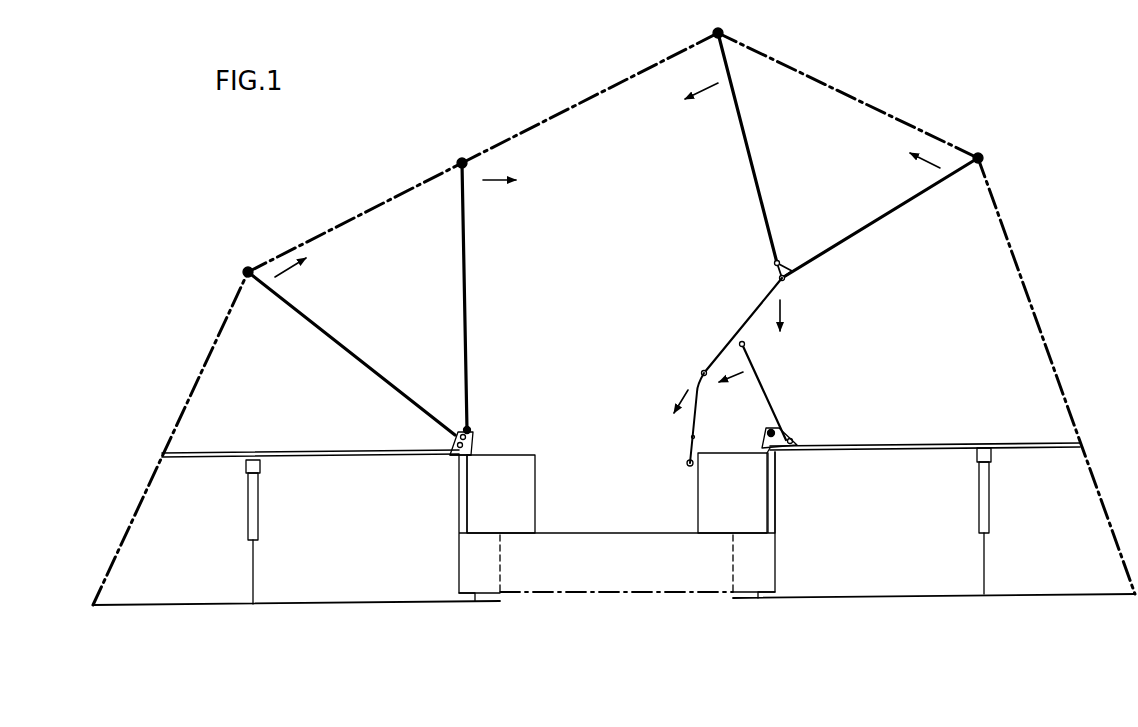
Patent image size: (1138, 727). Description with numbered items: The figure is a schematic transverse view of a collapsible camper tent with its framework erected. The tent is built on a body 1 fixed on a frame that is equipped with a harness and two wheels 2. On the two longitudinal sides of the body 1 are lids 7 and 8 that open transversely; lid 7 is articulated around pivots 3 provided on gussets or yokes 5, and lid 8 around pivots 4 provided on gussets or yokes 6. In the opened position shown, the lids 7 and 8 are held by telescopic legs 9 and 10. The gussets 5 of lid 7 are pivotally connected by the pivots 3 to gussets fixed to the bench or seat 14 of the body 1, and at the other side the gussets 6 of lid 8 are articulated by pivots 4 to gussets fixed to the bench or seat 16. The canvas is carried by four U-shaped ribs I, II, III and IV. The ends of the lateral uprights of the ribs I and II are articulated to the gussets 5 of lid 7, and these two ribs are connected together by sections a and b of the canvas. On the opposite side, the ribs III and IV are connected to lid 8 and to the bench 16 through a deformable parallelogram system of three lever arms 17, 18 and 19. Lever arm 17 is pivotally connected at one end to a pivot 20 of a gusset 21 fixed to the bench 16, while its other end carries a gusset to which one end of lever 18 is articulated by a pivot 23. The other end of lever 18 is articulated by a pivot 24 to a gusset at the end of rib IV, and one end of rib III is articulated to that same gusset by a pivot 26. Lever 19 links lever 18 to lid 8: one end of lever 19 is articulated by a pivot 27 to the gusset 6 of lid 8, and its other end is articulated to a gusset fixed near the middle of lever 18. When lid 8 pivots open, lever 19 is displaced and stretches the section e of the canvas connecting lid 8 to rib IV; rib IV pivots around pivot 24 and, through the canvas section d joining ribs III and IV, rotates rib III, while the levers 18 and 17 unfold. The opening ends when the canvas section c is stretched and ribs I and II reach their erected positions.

The body 1 is at (457, 492).
The wheels 2 is at (742, 575).
The pivot 3 is at (468, 430).
The pivot 4 is at (770, 430).
The gusset or yoke 5 is at (472, 447).
The gusset or yoke 6 is at (783, 447).
The lid 7 is at (310, 455).
The lid 8 is at (898, 448).
The telescopic leg 9 is at (253, 512).
The telescopic leg 10 is at (990, 493).
The bench or seat 14 is at (522, 518).
The bench or seat 16 is at (735, 500).
The lever arm 17 is at (690, 420).
The lever arm 18 is at (750, 317).
The lever arm 19 is at (765, 383).
The pivot 20 is at (693, 437).
The gusset 21 is at (687, 475).
The pivot 23 is at (704, 373).
The pivot 24 is at (783, 282).
The pivot 26 is at (776, 263).
The pivot 27 is at (793, 442).
The rib I is at (348, 347).
The rib II is at (465, 320).
The rib III is at (753, 173).
The rib IV is at (870, 223).
The canvas section a is at (197, 377).
The canvas section b is at (402, 190).
The canvas section c is at (627, 73).
The canvas section d is at (893, 110).
The canvas section e is at (1022, 263).